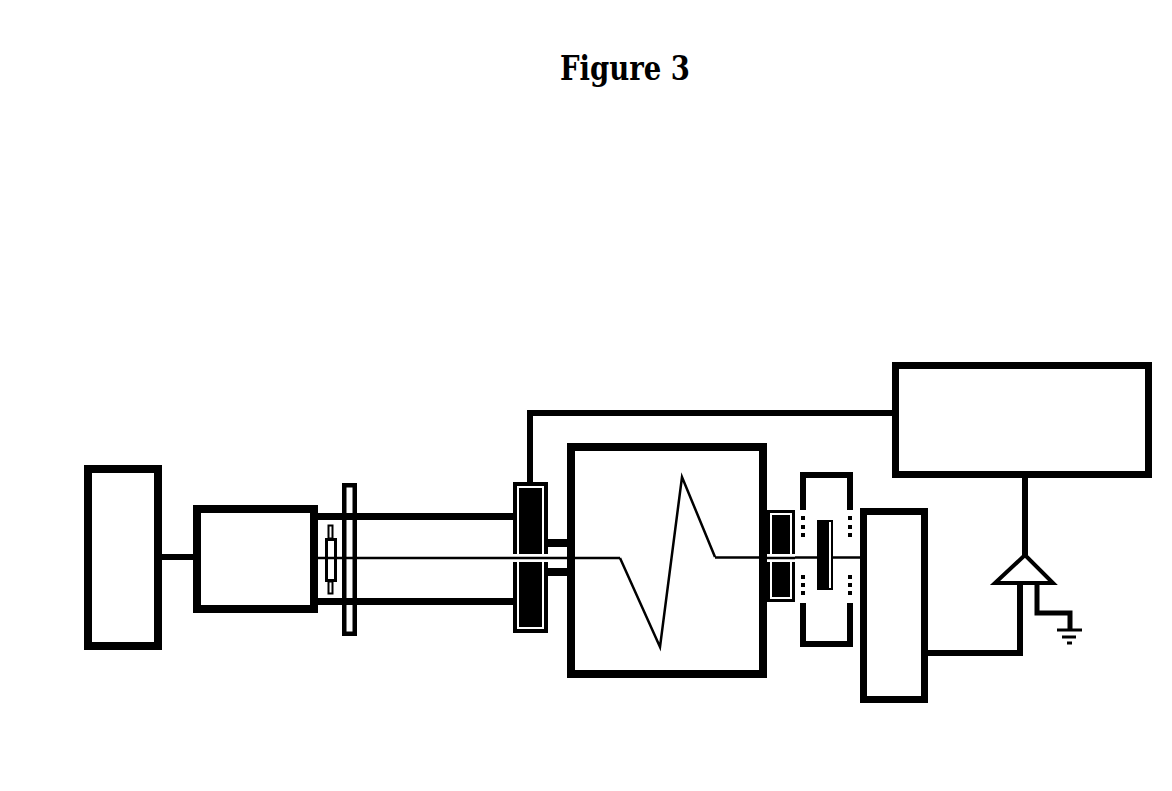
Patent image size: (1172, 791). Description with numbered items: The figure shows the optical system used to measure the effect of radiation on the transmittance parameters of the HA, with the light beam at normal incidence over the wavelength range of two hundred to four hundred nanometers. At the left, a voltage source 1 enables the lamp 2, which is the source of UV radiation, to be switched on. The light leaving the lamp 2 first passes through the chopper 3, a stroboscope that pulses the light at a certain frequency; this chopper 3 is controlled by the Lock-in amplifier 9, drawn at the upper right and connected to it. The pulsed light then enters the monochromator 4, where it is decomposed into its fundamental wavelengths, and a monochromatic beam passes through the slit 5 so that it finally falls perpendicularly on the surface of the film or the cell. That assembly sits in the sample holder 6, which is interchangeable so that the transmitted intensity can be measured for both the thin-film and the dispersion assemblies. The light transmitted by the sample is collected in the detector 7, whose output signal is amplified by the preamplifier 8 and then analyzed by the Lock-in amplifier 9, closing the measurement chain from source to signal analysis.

The voltage source 1 is at (140, 536).
The lamp 2 is at (355, 551).
The chopper 3 is at (700, 543).
The monochromator 4 is at (667, 580).
The slit 5 is at (780, 614).
The sample holder 6 is at (826, 540).
The detector 7 is at (942, 628).
The preamplifier 8 is at (1042, 589).
The Lock-in amplifier 9 is at (1022, 440).